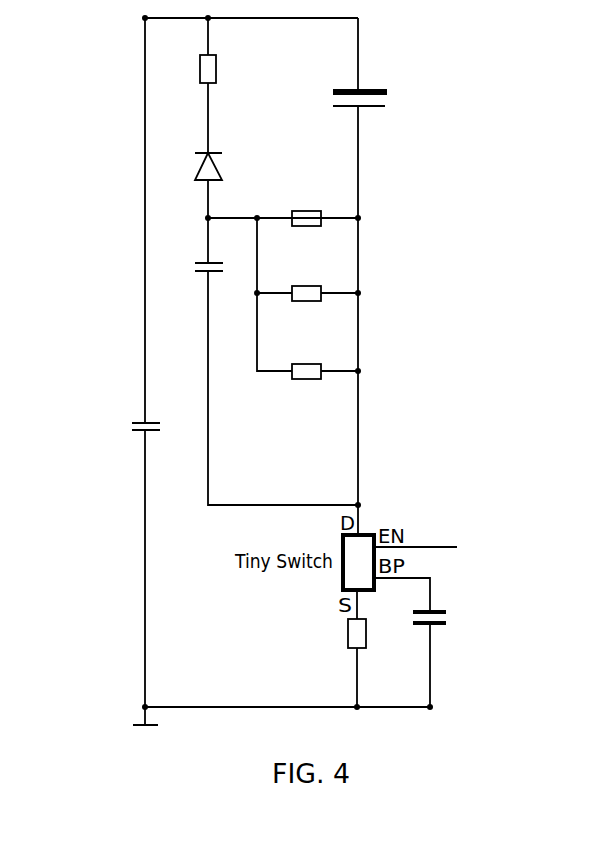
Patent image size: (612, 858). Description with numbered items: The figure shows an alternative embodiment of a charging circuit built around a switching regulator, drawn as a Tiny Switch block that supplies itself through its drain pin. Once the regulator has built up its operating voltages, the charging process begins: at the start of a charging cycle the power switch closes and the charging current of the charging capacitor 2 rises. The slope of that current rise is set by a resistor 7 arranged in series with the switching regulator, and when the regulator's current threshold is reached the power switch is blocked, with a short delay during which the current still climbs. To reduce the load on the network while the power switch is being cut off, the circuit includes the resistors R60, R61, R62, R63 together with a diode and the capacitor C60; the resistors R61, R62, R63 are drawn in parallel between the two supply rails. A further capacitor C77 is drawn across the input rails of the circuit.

The charging capacitor 2 is at (370, 89).
The resistor 7 is at (358, 633).
The resistor R60 is at (228, 69).
The resistor R61 is at (306, 207).
The resistor R62 is at (306, 281).
The resistor R63 is at (306, 359).
The capacitor C60 is at (189, 271).
The capacitor C77 is at (125, 425).